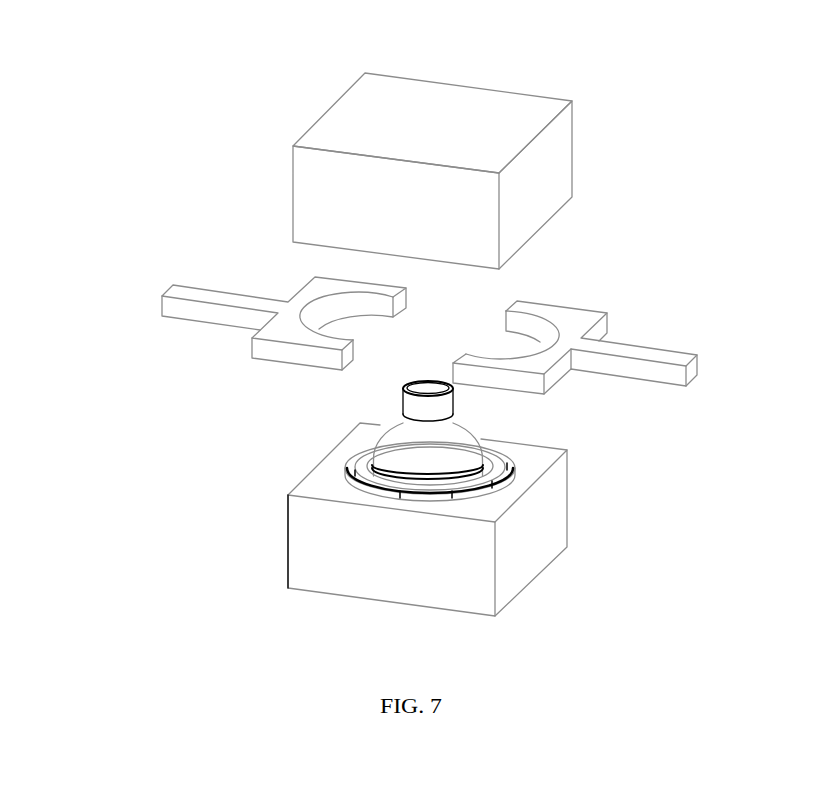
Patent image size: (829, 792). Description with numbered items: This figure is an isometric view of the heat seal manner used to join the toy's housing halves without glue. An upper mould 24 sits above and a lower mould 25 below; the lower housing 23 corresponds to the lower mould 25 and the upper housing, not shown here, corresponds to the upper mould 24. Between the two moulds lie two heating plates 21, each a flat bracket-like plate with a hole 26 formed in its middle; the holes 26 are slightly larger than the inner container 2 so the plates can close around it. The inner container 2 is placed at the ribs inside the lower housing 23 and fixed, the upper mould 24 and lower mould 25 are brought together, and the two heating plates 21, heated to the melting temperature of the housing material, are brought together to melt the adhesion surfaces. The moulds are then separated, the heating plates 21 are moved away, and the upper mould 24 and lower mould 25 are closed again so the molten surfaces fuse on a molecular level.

The inner container 2 is at (377, 444).
The heating plate 21 is at (250, 303).
The lower shell 23 is at (353, 475).
The upper mould 24 is at (563, 155).
The lower mould 25 is at (393, 542).
The hole 26 is at (354, 328).